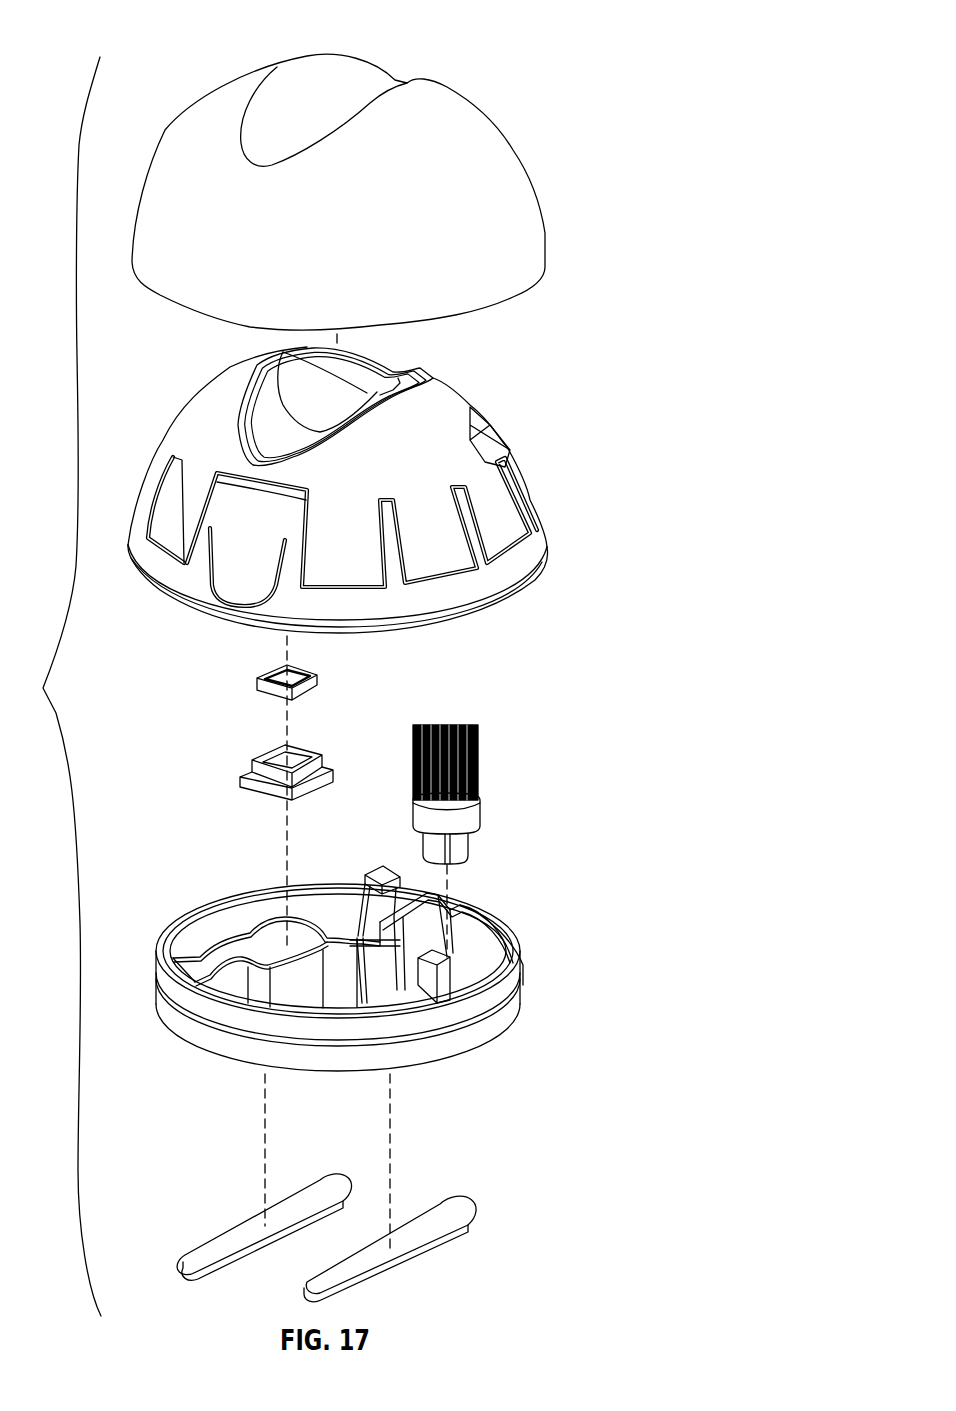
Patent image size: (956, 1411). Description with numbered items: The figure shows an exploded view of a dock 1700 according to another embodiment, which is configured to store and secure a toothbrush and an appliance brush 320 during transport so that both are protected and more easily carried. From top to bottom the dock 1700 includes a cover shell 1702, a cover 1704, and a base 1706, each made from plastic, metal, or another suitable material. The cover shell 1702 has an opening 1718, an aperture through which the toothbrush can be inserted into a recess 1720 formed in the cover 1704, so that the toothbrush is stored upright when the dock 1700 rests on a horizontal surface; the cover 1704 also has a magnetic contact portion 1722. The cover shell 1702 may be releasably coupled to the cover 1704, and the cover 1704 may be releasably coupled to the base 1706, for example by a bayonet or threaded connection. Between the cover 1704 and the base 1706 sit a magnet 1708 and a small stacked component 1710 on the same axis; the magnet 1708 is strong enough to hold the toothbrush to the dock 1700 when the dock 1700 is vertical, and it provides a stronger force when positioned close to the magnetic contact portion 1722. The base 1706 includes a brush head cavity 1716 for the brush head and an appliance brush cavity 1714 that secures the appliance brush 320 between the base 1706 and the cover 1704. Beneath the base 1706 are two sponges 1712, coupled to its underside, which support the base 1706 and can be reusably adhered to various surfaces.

The dock 1700 is at (553, 34).
The cover shell 1702 is at (350, 173).
The cover 1704 is at (346, 480).
The base 1706 is at (380, 958).
The magnet 1708 is at (297, 673).
The socket insert 1710 is at (297, 753).
The sponge 1712 is at (337, 1186).
The appliance brush cavity 1714 is at (468, 970).
The brush head cavity 1716 is at (267, 948).
The opening 1718 is at (342, 82).
The recess 1720 is at (302, 417).
The magnetic contact portion 1722 is at (262, 403).
The appliance brush 320 is at (442, 723).